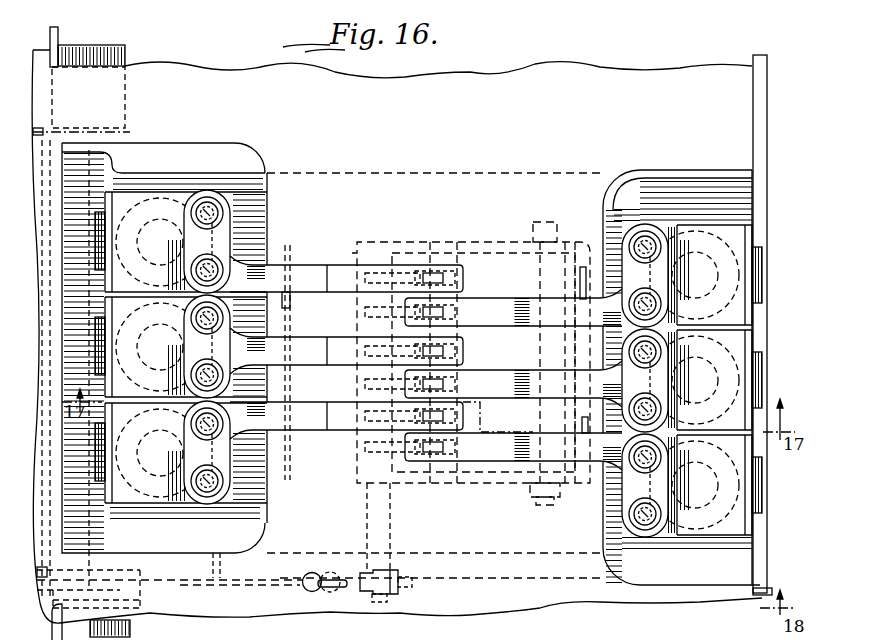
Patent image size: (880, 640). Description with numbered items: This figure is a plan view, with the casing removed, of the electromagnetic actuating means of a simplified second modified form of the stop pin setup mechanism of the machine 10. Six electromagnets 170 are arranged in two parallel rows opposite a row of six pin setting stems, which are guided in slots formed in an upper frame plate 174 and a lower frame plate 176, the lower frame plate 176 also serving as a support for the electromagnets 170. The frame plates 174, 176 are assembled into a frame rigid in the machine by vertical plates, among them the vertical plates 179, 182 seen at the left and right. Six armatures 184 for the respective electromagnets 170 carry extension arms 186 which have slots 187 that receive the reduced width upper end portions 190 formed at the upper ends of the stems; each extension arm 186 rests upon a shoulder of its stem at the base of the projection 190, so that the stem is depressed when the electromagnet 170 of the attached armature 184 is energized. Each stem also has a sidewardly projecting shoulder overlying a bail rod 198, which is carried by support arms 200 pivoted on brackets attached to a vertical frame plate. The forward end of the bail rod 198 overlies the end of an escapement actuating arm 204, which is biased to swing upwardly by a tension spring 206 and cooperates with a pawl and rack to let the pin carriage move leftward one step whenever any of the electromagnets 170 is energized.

The machine base 10 is at (401, 619).
The electromagnet 170 is at (155, 492).
The upper frame plate 174 is at (490, 90).
The lower frame plate 176 is at (107, 553).
The vertical plate 179 is at (58, 29).
The vertical plate 182 is at (754, 130).
The armature 184 is at (223, 233).
The extension arm 186 is at (314, 272).
The slot 187 is at (443, 450).
The reduced width upper end portion 190 is at (433, 275).
The bail rod 198 is at (380, 537).
The support arm 200 is at (500, 242).
The escapement actuating arm 204 is at (267, 583).
The tension spring 206 is at (330, 572).